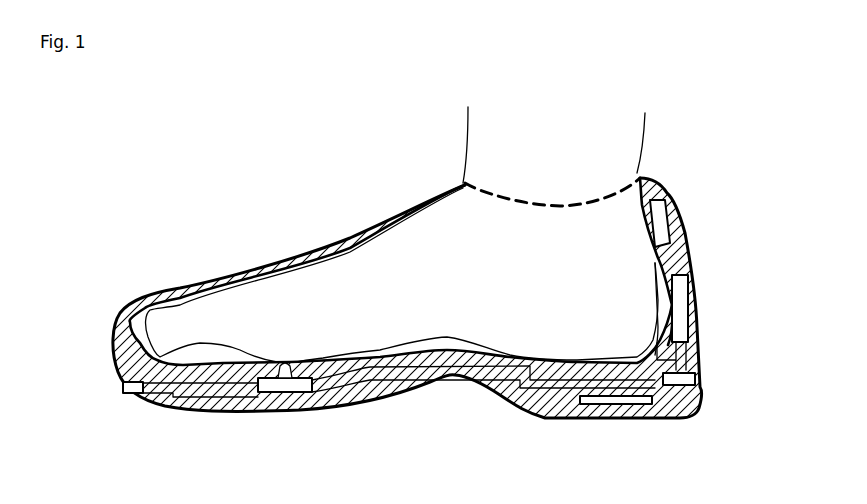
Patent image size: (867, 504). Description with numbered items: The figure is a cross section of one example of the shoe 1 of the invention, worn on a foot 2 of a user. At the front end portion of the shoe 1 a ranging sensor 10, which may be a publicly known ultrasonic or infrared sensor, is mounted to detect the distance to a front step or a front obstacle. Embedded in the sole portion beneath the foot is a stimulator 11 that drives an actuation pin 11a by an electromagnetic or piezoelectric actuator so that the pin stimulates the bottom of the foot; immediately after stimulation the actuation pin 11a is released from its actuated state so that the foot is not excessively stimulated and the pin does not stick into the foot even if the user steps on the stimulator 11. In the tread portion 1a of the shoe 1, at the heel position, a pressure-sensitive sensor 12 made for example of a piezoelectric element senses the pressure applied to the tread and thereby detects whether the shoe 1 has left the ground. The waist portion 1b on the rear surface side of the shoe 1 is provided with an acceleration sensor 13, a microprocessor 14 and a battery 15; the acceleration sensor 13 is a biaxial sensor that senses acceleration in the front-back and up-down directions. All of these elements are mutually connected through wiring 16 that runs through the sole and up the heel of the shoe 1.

The shoe 1 is at (163, 287).
The tread portion 1a is at (218, 412).
The waist portion 1b is at (695, 282).
The foot 2 is at (417, 267).
The ranging sensor 10 is at (135, 393).
The stimulator 11 is at (285, 395).
The actuation pin 11a is at (285, 360).
The pressure-sensitive sensor 12 is at (633, 407).
The acceleration sensor 13 is at (700, 385).
The microprocessor 14 is at (693, 325).
The battery 15 is at (665, 220).
The wiring 16 is at (445, 378).